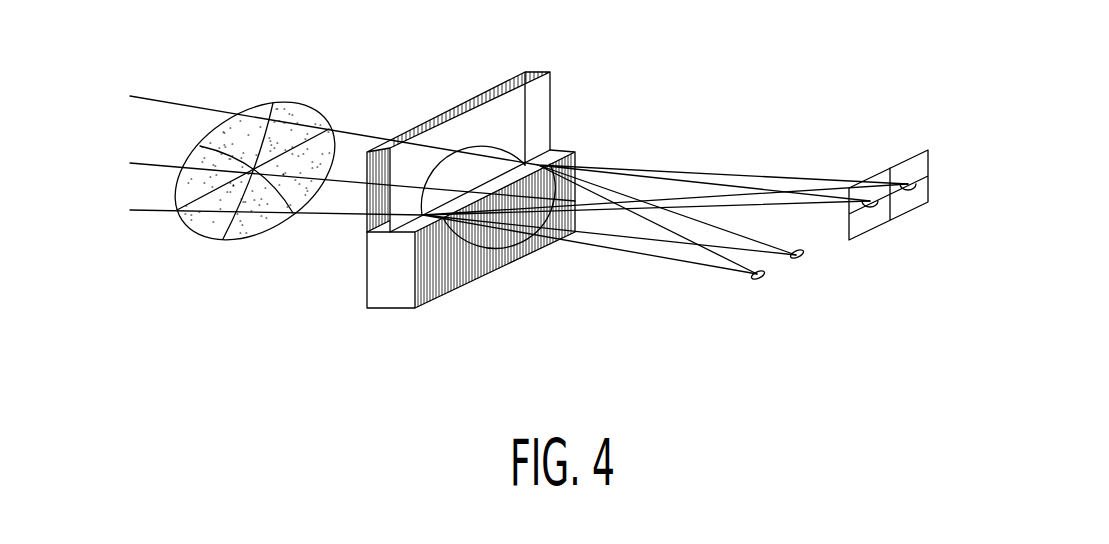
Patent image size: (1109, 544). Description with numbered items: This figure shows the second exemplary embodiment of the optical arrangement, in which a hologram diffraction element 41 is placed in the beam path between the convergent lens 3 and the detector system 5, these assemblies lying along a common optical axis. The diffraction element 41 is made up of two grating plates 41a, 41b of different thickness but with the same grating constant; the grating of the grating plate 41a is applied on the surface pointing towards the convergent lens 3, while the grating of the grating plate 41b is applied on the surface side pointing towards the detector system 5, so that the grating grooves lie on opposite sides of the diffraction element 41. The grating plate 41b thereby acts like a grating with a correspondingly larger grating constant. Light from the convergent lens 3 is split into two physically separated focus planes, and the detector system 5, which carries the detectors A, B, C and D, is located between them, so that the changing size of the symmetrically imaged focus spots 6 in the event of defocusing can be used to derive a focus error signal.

The convergent lens 3 is at (263, 102).
The diffraction element 41 is at (493, 199).
The grating plate 41a is at (543, 103).
The grating plate 41b is at (387, 285).
The detector system 5 is at (928, 160).
The focus spot 6 is at (797, 262).